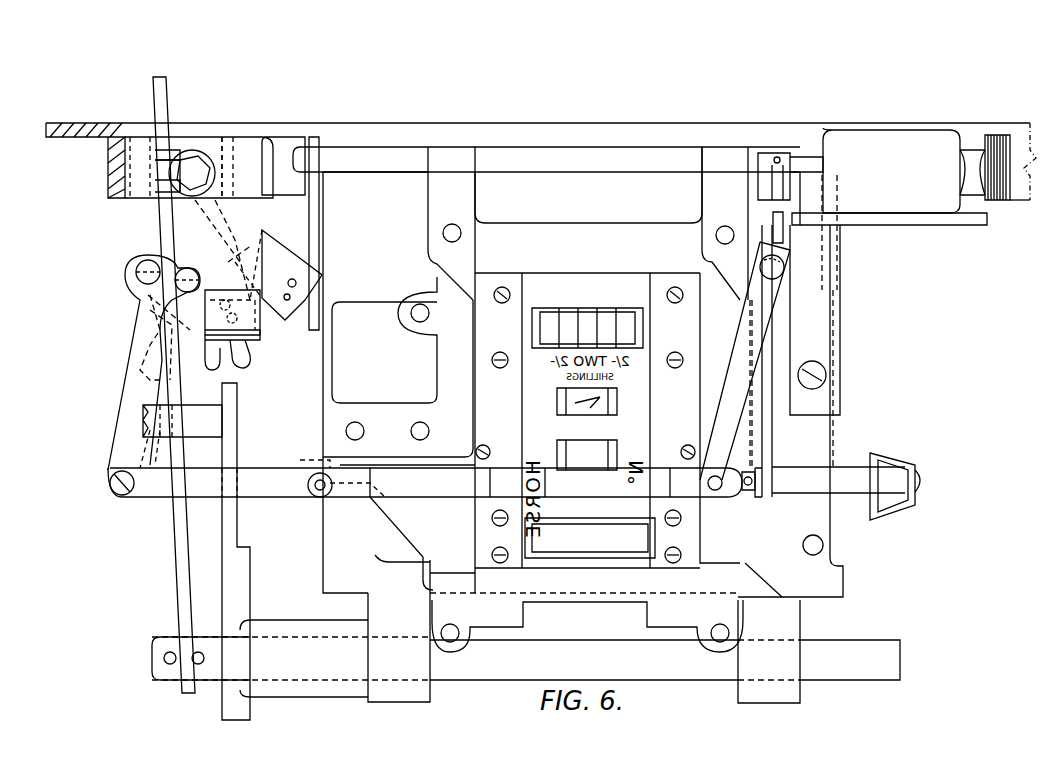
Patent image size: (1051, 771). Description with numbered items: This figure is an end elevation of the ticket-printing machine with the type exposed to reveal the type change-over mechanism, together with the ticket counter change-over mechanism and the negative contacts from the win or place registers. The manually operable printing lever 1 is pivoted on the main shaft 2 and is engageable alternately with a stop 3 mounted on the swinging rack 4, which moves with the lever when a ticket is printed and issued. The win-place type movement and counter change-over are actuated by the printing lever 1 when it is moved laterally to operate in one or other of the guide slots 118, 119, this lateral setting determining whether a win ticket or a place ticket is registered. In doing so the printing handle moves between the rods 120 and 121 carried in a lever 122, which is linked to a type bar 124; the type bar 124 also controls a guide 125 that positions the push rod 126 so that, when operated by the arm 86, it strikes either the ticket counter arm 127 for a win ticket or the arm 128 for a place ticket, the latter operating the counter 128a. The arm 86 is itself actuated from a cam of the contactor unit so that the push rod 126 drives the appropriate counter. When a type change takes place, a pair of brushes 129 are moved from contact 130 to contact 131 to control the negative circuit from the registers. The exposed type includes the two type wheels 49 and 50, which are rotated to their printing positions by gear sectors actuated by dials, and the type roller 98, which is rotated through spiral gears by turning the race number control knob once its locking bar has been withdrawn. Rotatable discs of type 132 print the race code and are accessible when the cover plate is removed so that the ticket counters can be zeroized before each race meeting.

The printing lever 1 is at (159, 103).
The main shaft 2 is at (473, 413).
The stop 3 is at (181, 436).
The swinging rack 4 is at (224, 517).
The type wheel 49 is at (618, 398).
The type wheel 50 is at (618, 460).
The arm 86 is at (895, 458).
The type roller 98 is at (525, 538).
The guide slot 118 is at (165, 128).
The guide slot 119 is at (230, 125).
The rod 120 is at (138, 276).
The rod 121 is at (191, 269).
The lever 122 is at (128, 389).
The type bar 124 is at (510, 463).
The guide 125 is at (743, 341).
The push rod 126 is at (773, 436).
The ticket counter arm 127 is at (784, 191).
The arm 128 is at (762, 191).
The ticket counter 128a is at (900, 299).
The brushes 129 is at (240, 232).
The contact 130 is at (250, 366).
The contact 131 is at (300, 328).
The rotatable discs of type 132 is at (532, 321).